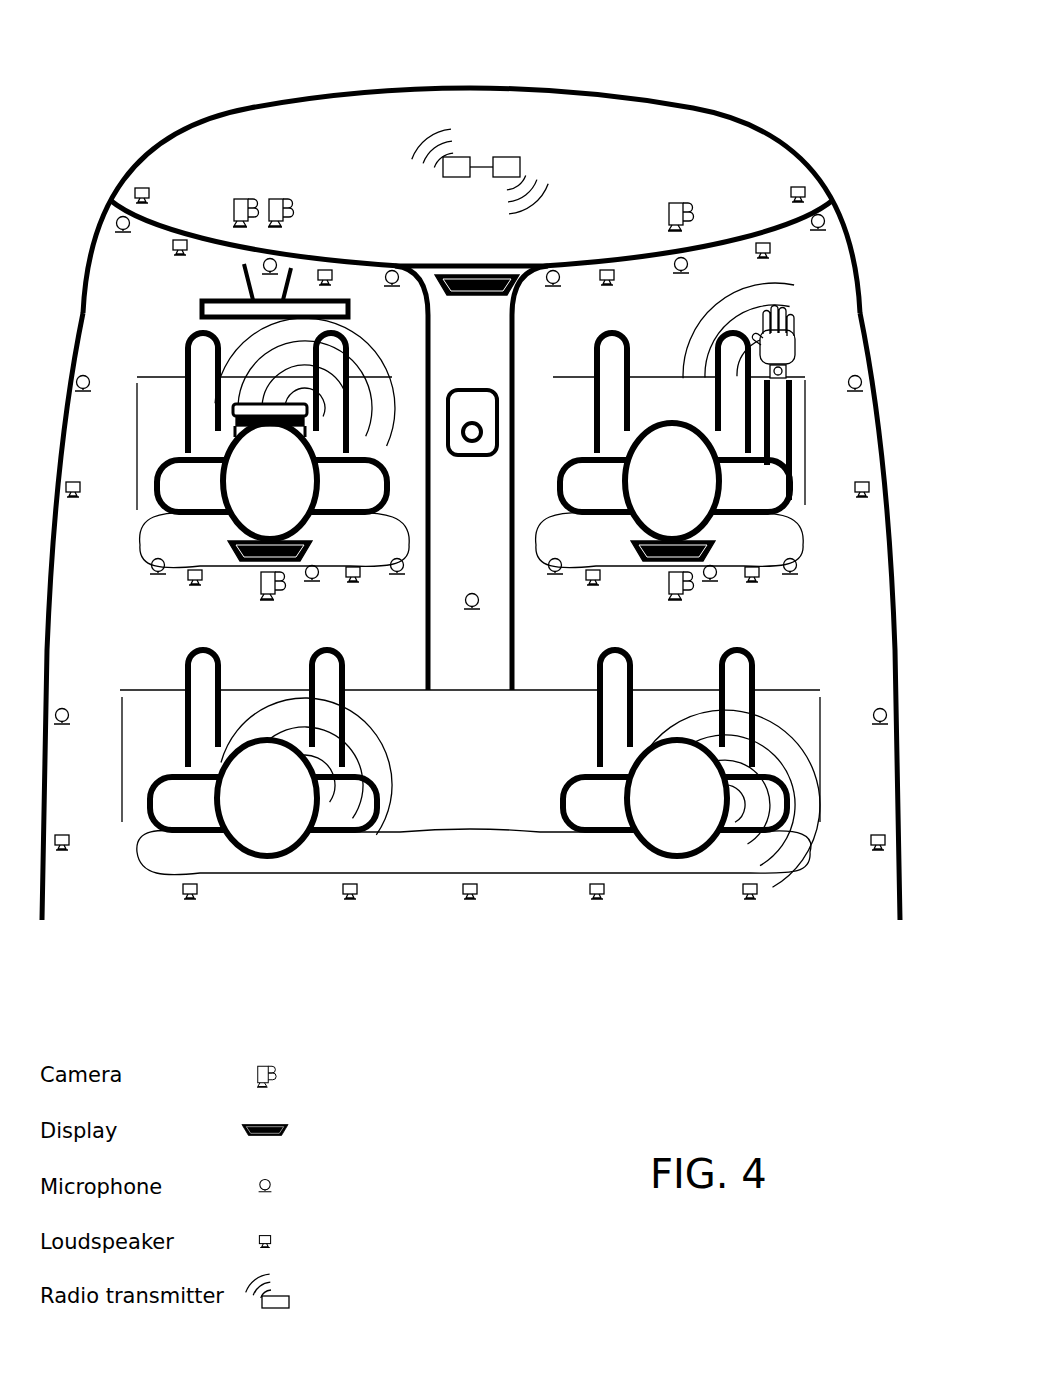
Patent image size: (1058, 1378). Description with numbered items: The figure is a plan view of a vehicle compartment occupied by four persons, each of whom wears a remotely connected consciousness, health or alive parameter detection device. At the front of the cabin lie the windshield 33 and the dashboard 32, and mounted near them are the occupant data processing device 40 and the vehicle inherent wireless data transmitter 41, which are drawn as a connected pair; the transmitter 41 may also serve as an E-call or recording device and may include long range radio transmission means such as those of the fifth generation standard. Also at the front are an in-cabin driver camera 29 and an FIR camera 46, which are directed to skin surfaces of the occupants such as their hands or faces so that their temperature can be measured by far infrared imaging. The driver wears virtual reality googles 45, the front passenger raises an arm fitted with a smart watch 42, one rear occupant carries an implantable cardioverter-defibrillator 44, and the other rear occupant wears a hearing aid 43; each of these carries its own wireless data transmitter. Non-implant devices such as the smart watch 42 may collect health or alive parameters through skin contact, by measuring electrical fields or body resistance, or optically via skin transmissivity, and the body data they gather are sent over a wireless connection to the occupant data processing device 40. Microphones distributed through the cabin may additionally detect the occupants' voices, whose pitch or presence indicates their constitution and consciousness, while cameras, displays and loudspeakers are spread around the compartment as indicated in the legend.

The FIR camera 46 is at (243, 198).
The in-cabin driver camera 29 is at (283, 198).
The dashboard 32 is at (337, 218).
The windshield 33 is at (440, 89).
The occupant data processing device 40 is at (466, 156).
The wireless data transmitter 41 is at (508, 156).
The virtual reality googles 45 is at (262, 412).
The smart watch 42 is at (786, 370).
The implantable cardioverter-defibrillator 44 is at (312, 778).
The hearing aid 43 is at (733, 805).